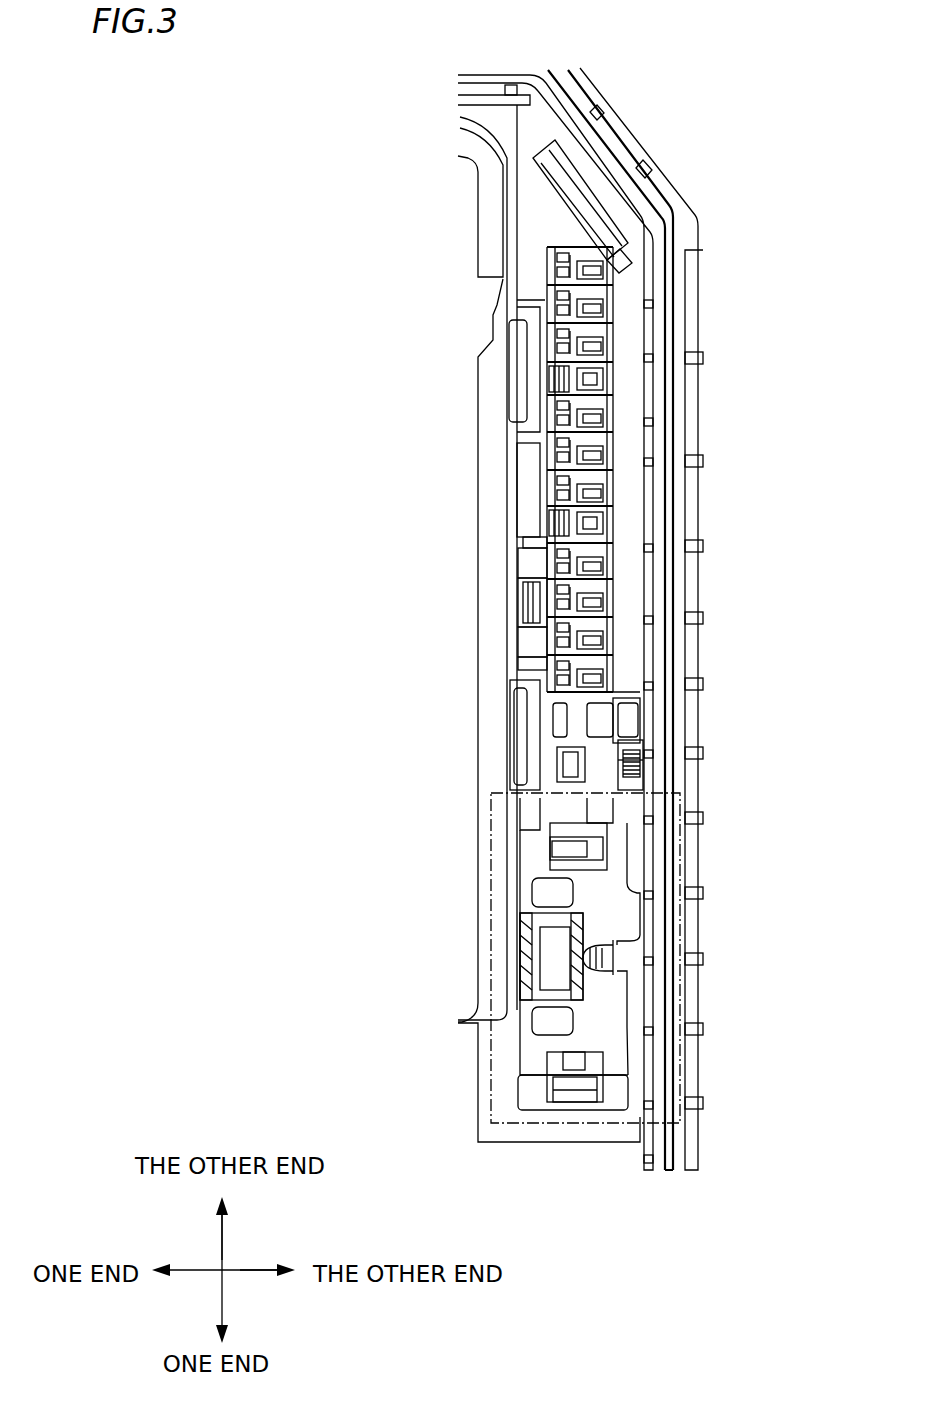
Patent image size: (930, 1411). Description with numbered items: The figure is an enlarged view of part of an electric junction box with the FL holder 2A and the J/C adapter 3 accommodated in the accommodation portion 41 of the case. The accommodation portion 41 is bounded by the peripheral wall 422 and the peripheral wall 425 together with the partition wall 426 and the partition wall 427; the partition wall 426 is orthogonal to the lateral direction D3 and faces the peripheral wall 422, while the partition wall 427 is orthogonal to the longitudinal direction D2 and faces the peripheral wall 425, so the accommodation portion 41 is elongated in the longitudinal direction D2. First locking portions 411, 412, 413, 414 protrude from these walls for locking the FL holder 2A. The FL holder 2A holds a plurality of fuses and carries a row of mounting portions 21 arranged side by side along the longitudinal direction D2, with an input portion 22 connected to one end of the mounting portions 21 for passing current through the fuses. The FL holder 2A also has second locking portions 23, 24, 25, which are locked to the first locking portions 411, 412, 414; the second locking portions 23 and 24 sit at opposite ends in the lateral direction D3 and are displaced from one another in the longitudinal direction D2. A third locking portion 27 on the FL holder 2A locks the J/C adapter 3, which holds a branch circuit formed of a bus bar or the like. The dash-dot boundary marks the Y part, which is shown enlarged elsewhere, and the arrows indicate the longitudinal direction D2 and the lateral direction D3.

The J/C adapter 3 is at (645, 918).
The mounting portions 21 is at (540, 308).
The input portion 22 is at (557, 720).
The second locking portion 23 is at (645, 748).
The second locking portion 24 is at (521, 590).
The second locking portion 25 is at (600, 197).
The third locking portion 27 is at (603, 848).
The FL holder 2A is at (618, 636).
The accommodation portion 41 is at (634, 468).
The first locking portion 411 is at (650, 770).
The first locking portion 412 is at (518, 607).
The first locking portion 413 is at (573, 1090).
The first locking portion 414 is at (628, 142).
The peripheral wall 422 is at (673, 577).
The peripheral wall 425 is at (660, 172).
The partition wall 426 is at (515, 500).
The partition wall 427 is at (620, 1087).
The Y part Y is at (492, 860).
The longitudinal direction D2 is at (220, 1250).
The lateral direction D3 is at (252, 1272).